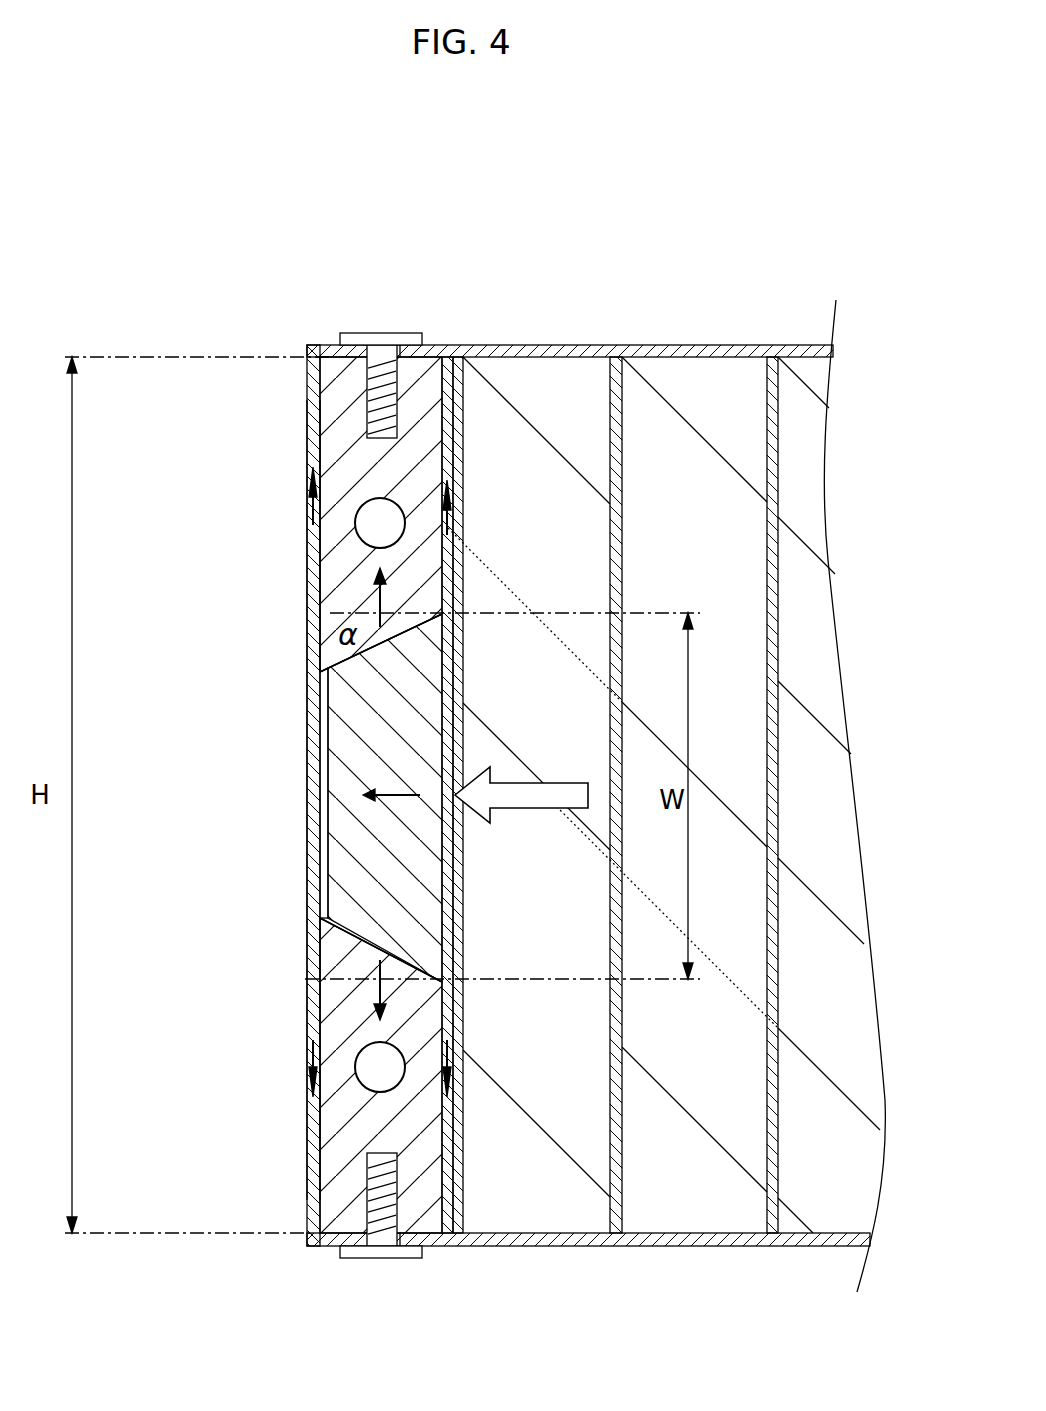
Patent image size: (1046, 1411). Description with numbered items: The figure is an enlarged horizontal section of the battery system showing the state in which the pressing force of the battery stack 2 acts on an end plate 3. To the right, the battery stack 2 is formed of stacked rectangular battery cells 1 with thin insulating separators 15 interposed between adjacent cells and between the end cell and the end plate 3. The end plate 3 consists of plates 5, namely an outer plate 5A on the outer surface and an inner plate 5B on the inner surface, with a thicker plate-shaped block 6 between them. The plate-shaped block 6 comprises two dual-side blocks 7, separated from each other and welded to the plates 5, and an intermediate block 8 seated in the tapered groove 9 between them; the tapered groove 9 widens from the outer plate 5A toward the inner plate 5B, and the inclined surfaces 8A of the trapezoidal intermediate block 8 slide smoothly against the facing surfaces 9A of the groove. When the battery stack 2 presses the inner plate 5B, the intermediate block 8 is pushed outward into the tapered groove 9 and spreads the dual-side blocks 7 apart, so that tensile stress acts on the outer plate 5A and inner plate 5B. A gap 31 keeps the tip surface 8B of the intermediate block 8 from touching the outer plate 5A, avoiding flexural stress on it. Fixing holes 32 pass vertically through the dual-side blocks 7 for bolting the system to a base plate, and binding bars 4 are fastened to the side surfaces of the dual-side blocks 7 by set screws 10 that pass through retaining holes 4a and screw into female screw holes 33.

The rectangular battery cell 1 is at (555, 395).
The battery stack 2 is at (575, 257).
The end plate 3 is at (131, 480).
The binding bar 4 is at (548, 345).
The retaining hole 4a is at (408, 352).
The plate 5 is at (176, 435).
The outer plate 5A is at (318, 550).
The inner plate 5B is at (307, 468).
The plate-shaped block 6 is at (176, 605).
The dual-side block 7 is at (348, 575).
The intermediate block 8 is at (355, 783).
The inclined surface 8A is at (325, 665).
The tip surface 8B is at (328, 740).
The tapered groove 9 is at (352, 928).
The facing surface 9A is at (405, 632).
The set screw 10 is at (385, 333).
The separator 15 is at (458, 1162).
The gap 31 is at (328, 835).
The fixing hole 32 is at (407, 520).
The female screw hole 33 is at (365, 390).